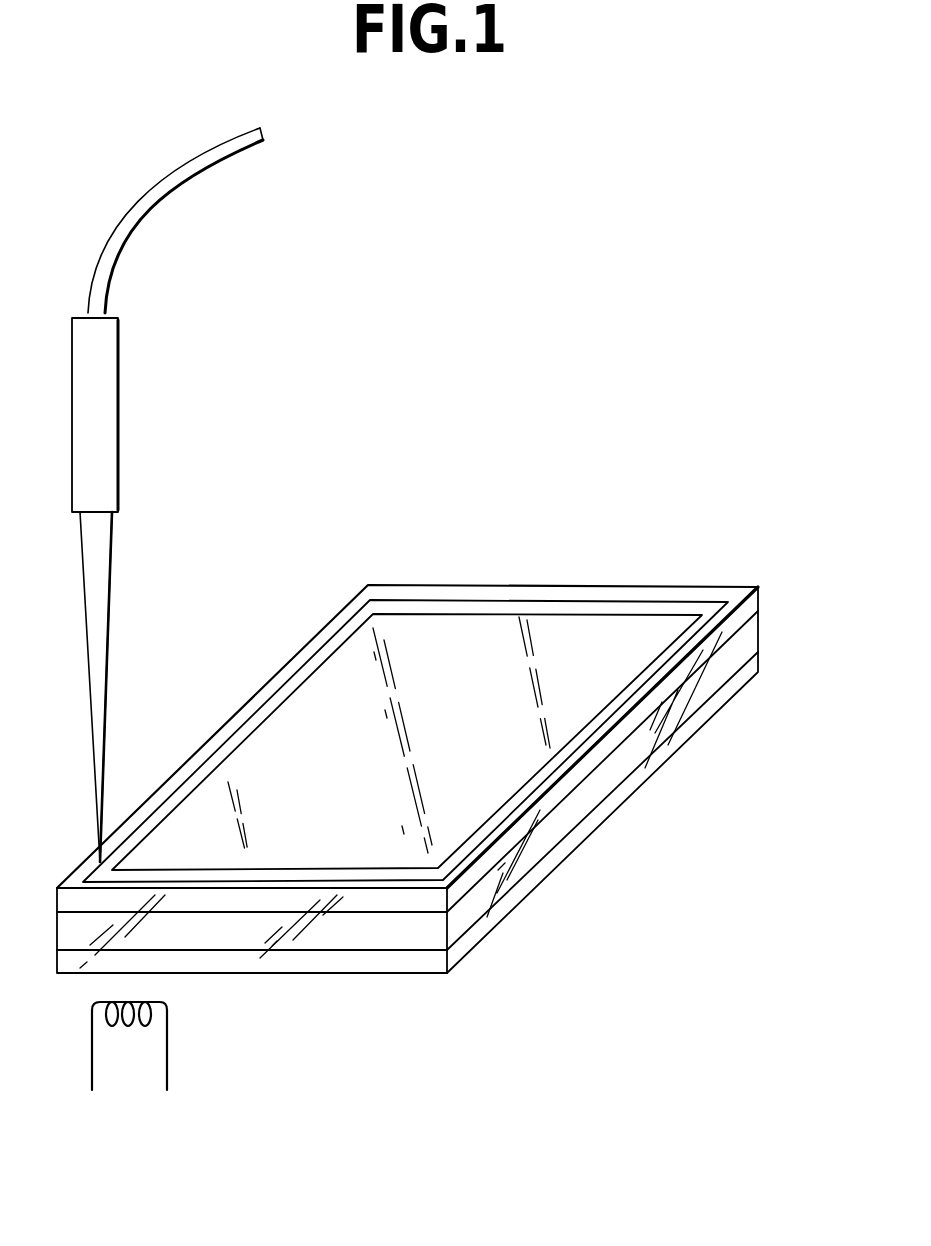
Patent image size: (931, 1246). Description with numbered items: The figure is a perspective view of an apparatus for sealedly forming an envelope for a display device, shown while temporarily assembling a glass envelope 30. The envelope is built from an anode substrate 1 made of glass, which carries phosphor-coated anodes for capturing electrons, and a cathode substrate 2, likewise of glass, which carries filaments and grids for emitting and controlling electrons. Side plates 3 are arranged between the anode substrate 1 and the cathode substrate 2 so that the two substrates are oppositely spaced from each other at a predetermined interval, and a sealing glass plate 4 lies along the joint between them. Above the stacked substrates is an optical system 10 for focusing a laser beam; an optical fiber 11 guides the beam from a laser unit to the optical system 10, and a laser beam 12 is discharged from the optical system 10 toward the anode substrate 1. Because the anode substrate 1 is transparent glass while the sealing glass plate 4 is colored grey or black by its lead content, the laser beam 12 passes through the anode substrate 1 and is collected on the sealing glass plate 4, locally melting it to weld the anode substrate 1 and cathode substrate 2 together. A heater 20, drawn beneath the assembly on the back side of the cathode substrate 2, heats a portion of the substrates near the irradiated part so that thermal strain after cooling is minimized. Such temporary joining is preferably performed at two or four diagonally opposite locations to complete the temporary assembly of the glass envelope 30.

The anode substrate 1 is at (620, 590).
The cathode substrate 2 is at (480, 938).
The side plates 3 is at (742, 638).
The sealing glass plate 4 is at (412, 600).
The optical system 10 is at (112, 369).
The optical fiber 11 is at (207, 163).
The laser beam 12 is at (100, 532).
The heater 20 is at (130, 1062).
The glass envelope 30 is at (434, 816).